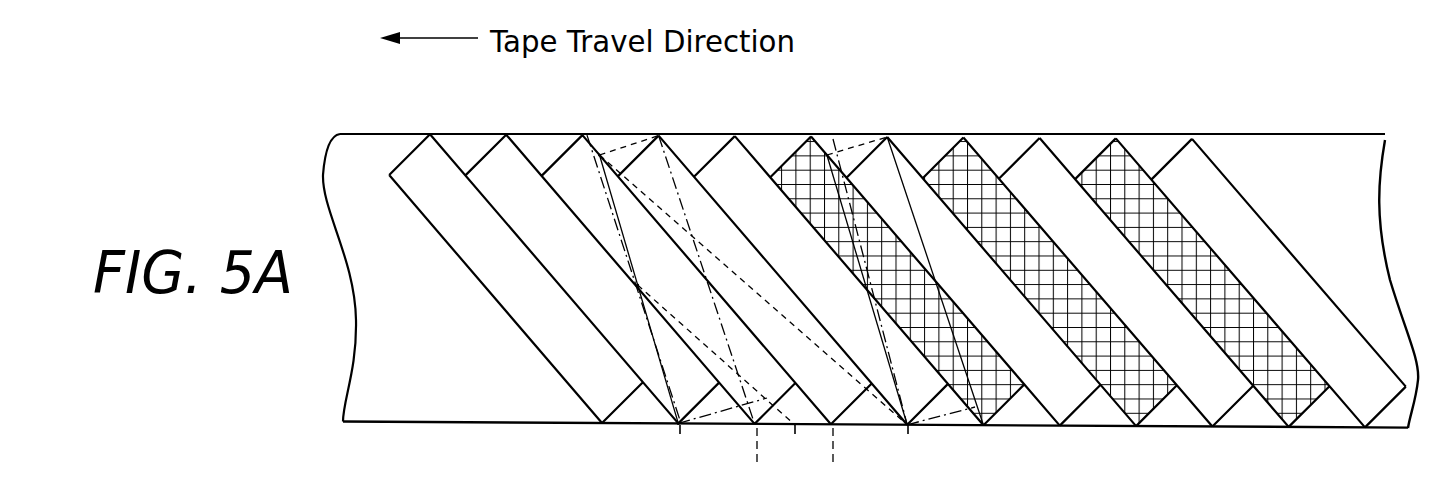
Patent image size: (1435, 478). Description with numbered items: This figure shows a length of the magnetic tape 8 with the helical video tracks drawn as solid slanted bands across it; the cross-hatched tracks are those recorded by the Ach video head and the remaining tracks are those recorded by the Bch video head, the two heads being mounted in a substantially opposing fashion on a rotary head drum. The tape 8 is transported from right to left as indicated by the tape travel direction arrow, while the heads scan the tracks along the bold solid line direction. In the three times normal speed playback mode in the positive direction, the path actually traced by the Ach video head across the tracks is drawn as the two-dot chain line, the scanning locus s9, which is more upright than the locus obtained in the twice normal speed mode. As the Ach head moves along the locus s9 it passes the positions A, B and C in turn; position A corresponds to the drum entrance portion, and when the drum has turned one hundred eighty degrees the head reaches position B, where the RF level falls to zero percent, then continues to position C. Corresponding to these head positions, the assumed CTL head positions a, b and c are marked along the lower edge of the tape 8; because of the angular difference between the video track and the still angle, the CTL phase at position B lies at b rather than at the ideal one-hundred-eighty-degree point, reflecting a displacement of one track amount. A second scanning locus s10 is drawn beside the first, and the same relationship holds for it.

The magnetic tape 8 is at (1245, 136).
The head scanning locus s9 is at (680, 147).
The head scanning locus s10 is at (857, 145).
The position A is at (687, 402).
The position B is at (653, 258).
The position C is at (600, 153).
The CTL head position a is at (679, 445).
The CTL head position b is at (795, 445).
The CTL head position c is at (907, 445).